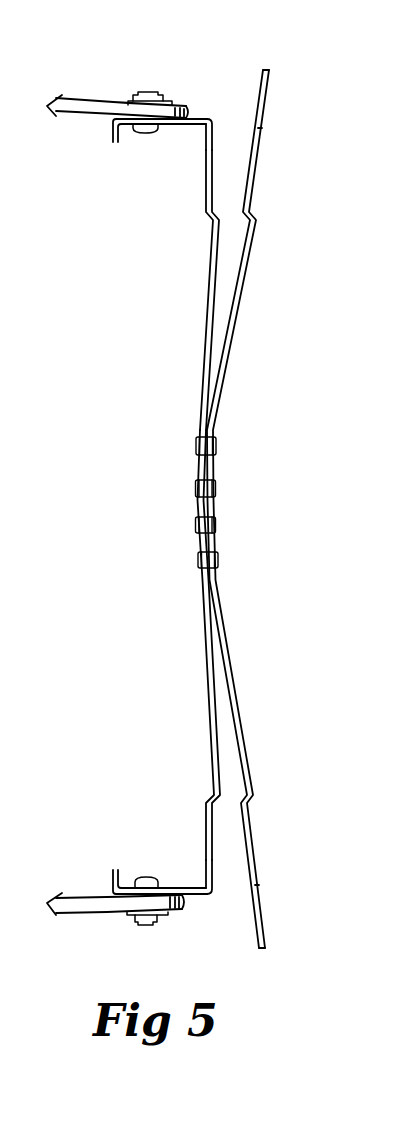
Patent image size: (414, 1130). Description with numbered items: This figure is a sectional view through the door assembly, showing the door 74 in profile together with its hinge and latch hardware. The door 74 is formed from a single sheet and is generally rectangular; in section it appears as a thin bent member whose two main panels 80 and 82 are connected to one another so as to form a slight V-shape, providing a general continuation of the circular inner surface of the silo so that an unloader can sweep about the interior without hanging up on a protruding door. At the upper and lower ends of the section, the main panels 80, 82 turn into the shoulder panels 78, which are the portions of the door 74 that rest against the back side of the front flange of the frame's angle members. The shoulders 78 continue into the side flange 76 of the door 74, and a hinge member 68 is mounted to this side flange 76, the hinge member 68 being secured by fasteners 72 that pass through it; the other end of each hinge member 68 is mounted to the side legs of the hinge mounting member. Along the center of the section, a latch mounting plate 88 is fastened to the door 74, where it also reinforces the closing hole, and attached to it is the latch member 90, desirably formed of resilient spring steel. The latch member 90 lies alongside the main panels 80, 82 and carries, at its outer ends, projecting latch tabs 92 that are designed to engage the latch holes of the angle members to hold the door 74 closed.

The hinge member 68 is at (85, 92).
The fastener 72 is at (147, 130).
The door 74 is at (202, 253).
The side flange 76 is at (180, 124).
The shoulder panel 78 is at (214, 142).
The main panel 80 is at (210, 717).
The main panel 82 is at (208, 293).
The latch mounting plate 88 is at (215, 467).
The latch member 90 is at (238, 319).
The latch tab 92 is at (262, 128).